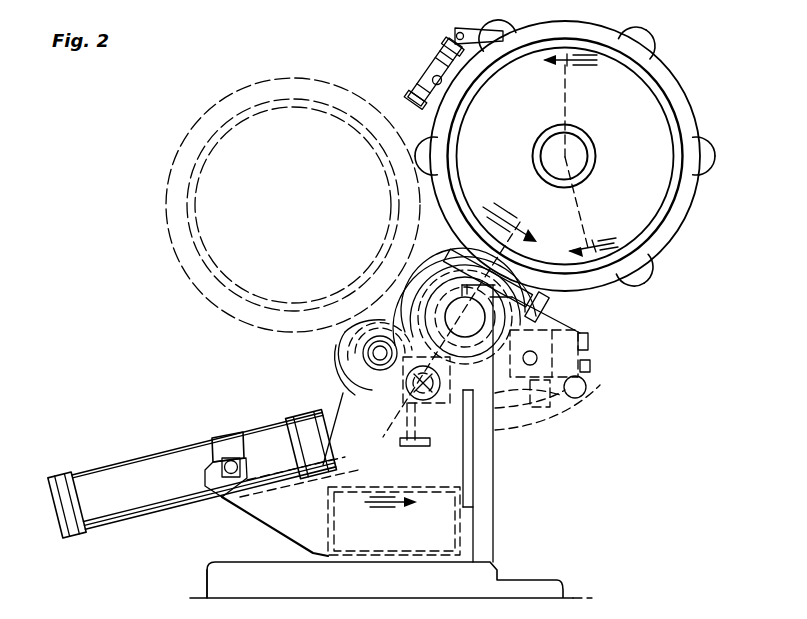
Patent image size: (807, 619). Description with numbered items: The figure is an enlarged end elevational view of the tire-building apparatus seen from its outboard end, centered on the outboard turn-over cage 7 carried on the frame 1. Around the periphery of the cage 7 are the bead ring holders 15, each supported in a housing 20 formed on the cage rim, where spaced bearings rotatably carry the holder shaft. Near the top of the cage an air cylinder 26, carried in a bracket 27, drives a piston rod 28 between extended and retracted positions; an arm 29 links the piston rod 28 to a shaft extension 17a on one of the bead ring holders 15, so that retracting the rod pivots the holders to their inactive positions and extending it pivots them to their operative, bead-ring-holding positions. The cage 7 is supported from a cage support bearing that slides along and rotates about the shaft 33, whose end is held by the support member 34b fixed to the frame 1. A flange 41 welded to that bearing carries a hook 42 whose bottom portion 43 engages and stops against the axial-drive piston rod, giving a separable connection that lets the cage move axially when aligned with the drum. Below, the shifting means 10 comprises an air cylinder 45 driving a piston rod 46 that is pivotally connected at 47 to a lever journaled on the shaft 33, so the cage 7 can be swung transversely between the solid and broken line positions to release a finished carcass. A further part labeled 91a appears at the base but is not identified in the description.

The frame 1 is at (512, 524).
The outboard turn-over cage 7 is at (182, 133).
The shifting means 10 is at (278, 405).
The bead ring holder 15 is at (665, 24).
The shaft extension 17a is at (500, 32).
The housing 20 is at (648, 41).
The air cylinder 26 is at (424, 52).
The bracket 27 is at (430, 81).
The piston rod 28 is at (456, 33).
The arm 29 is at (478, 33).
The shaft 33 is at (459, 314).
The support member 34b is at (546, 300).
The flange 41 is at (447, 262).
The hook 42 is at (362, 340).
The bottom portion 43 is at (405, 380).
The air cylinder 45 is at (148, 476).
The piston rod 46 is at (394, 521).
The pivotal connection 47 is at (402, 468).
The base plate 91a is at (295, 594).